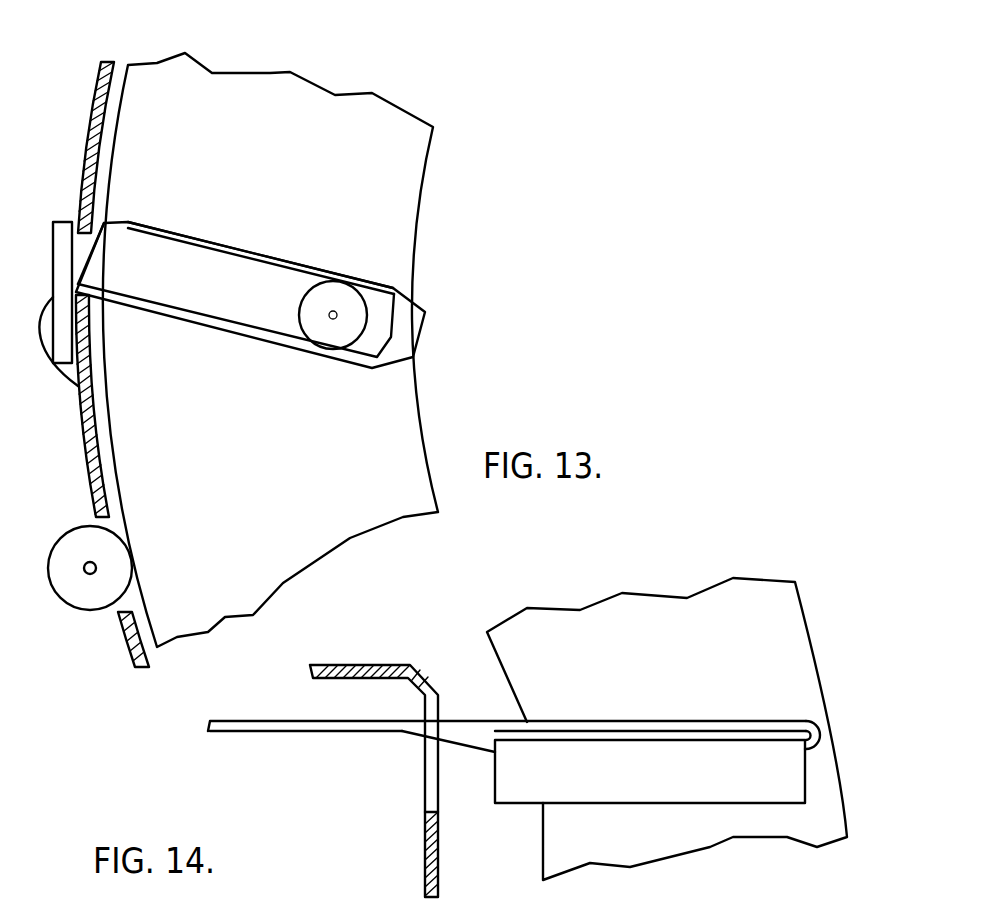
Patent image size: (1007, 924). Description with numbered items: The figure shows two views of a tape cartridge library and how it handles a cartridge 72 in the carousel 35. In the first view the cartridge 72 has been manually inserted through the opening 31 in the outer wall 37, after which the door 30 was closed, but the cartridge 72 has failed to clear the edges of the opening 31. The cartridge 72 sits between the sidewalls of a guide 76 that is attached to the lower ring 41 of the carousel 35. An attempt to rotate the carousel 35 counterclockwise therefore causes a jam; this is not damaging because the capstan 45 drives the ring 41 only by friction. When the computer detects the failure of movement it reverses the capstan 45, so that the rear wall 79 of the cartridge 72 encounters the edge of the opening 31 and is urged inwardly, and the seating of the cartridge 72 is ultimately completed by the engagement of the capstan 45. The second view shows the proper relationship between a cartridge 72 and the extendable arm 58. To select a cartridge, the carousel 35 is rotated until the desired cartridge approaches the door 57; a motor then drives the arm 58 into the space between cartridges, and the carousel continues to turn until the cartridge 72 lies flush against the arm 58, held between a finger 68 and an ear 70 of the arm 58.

In FIG. 13, the door 30 is at (78, 386).
In FIG. 13, the opening 31 is at (80, 327).
In FIG. 13, the carousel 35 is at (365, 82).
In FIG. 14, the carousel 35 is at (605, 618).
In FIG. 13, the outer wall 37 is at (90, 460).
In FIG. 13, the lower ring 41 is at (385, 138).
In FIG. 13, the capstan 45 is at (118, 562).
In FIG. 14, the door 57 is at (430, 767).
In FIG. 14, the arm 58 is at (240, 730).
In FIG. 14, the finger 68 is at (827, 723).
In FIG. 14, the ear 70 is at (467, 740).
In FIG. 13, the cartridge 72 is at (260, 283).
In FIG. 14, the cartridge 72 is at (667, 784).
In FIG. 13, the guide 76 is at (400, 342).
In FIG. 13, the rear wall 79 is at (85, 252).